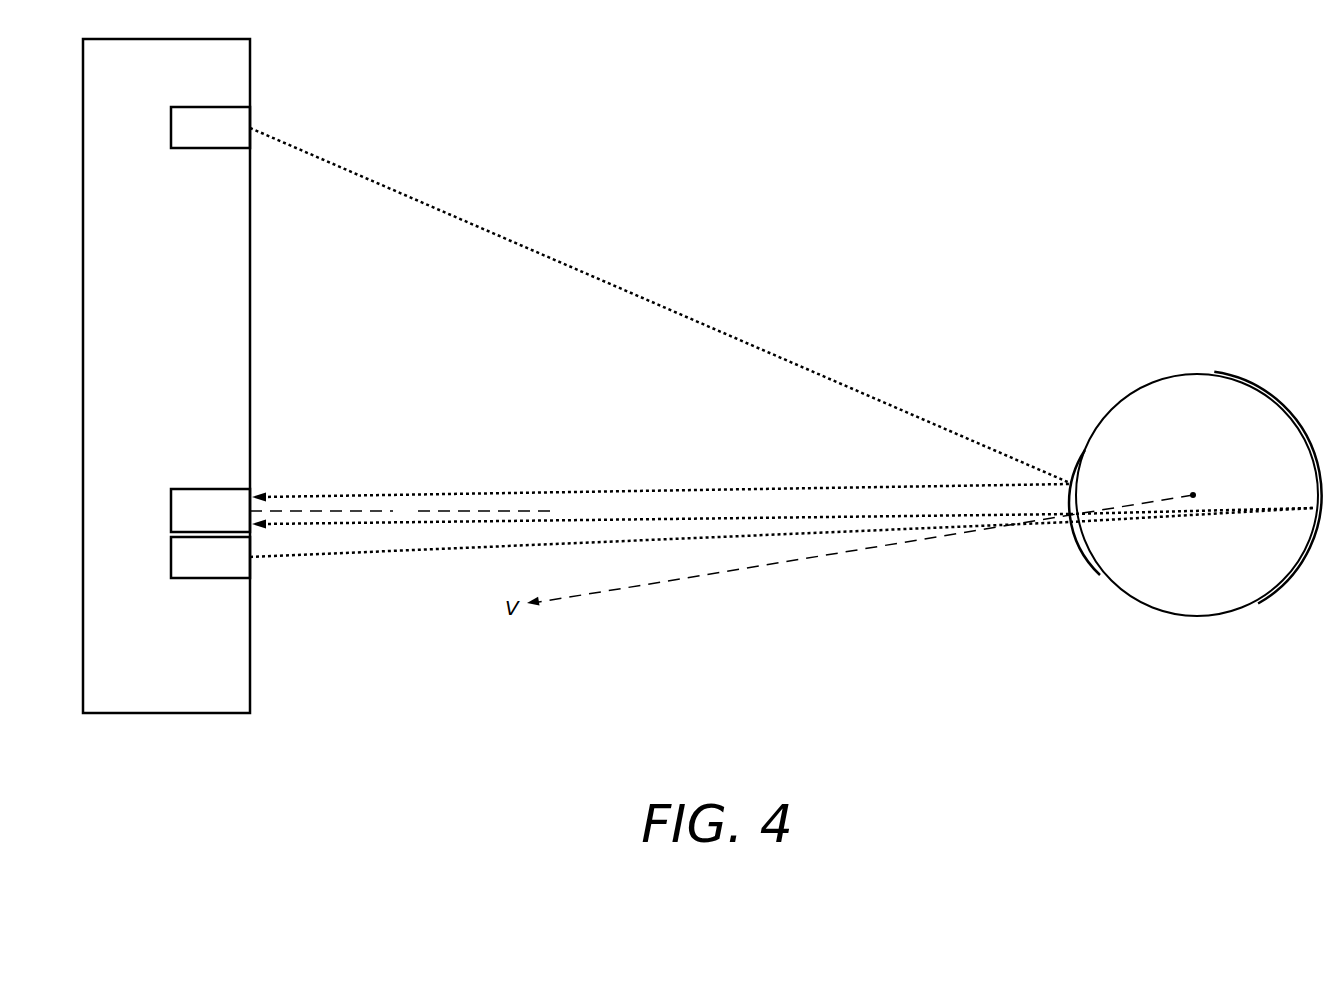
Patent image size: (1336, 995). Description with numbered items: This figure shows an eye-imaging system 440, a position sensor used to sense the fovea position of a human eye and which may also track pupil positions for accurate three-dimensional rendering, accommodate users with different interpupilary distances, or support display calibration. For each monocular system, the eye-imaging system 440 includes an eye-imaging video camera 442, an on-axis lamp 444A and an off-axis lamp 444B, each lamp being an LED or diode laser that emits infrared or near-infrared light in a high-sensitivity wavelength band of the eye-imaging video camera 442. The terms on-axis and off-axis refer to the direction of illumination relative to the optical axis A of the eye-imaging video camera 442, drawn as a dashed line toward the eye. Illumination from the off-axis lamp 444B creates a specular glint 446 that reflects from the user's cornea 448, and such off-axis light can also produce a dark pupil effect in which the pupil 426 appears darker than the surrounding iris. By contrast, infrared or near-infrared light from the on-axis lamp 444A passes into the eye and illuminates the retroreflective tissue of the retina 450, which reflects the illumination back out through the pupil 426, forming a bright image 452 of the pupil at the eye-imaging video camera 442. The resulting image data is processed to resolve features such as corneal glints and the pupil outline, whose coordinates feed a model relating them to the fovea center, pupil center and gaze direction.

The eye-imaging system 440 is at (166, 376).
The eye-imaging video camera 442 is at (361, 510).
The on-axis lamp 444A is at (620, 295).
The off-axis lamp 444B is at (620, 550).
The specular glint 446 is at (717, 488).
The bright image of the pupil 452 is at (777, 517).
The pupil 426 is at (1128, 457).
The cornea 448 is at (1078, 535).
The retina 450 is at (1257, 397).